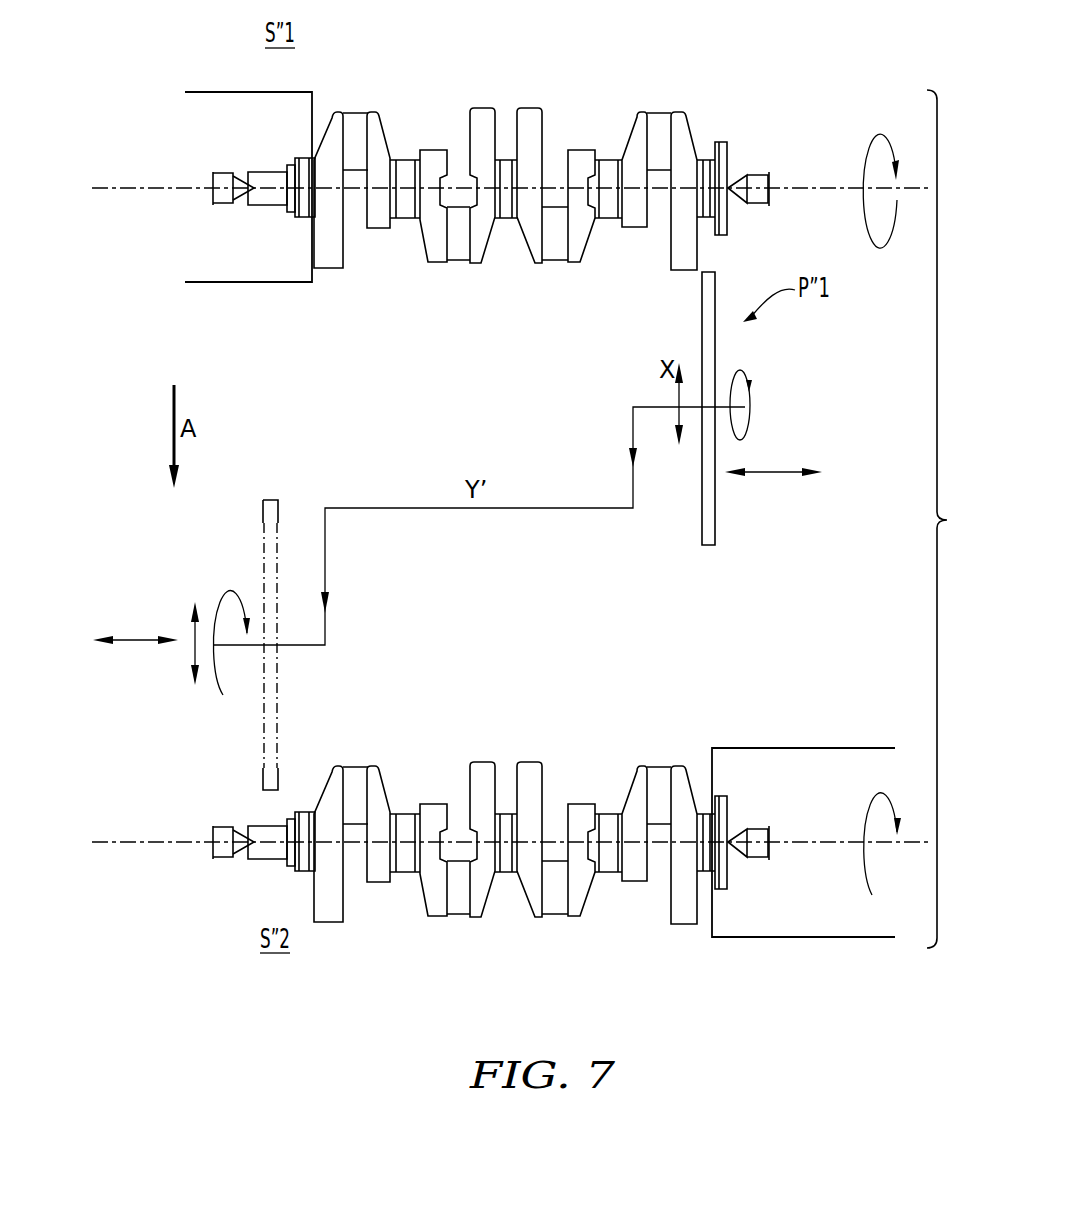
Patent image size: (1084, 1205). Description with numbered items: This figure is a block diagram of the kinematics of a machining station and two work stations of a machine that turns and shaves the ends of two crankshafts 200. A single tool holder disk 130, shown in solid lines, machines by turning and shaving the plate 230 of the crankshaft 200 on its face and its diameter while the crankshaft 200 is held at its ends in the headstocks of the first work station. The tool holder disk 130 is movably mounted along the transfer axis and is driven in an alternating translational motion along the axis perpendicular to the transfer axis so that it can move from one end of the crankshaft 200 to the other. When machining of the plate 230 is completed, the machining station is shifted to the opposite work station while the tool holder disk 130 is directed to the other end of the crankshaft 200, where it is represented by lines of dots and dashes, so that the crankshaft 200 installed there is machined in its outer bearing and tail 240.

The crankshaft 200 is at (530, 88).
The tool holder disk 130 is at (710, 535).
The plate 230 is at (737, 170).
The tail 240 is at (287, 168).